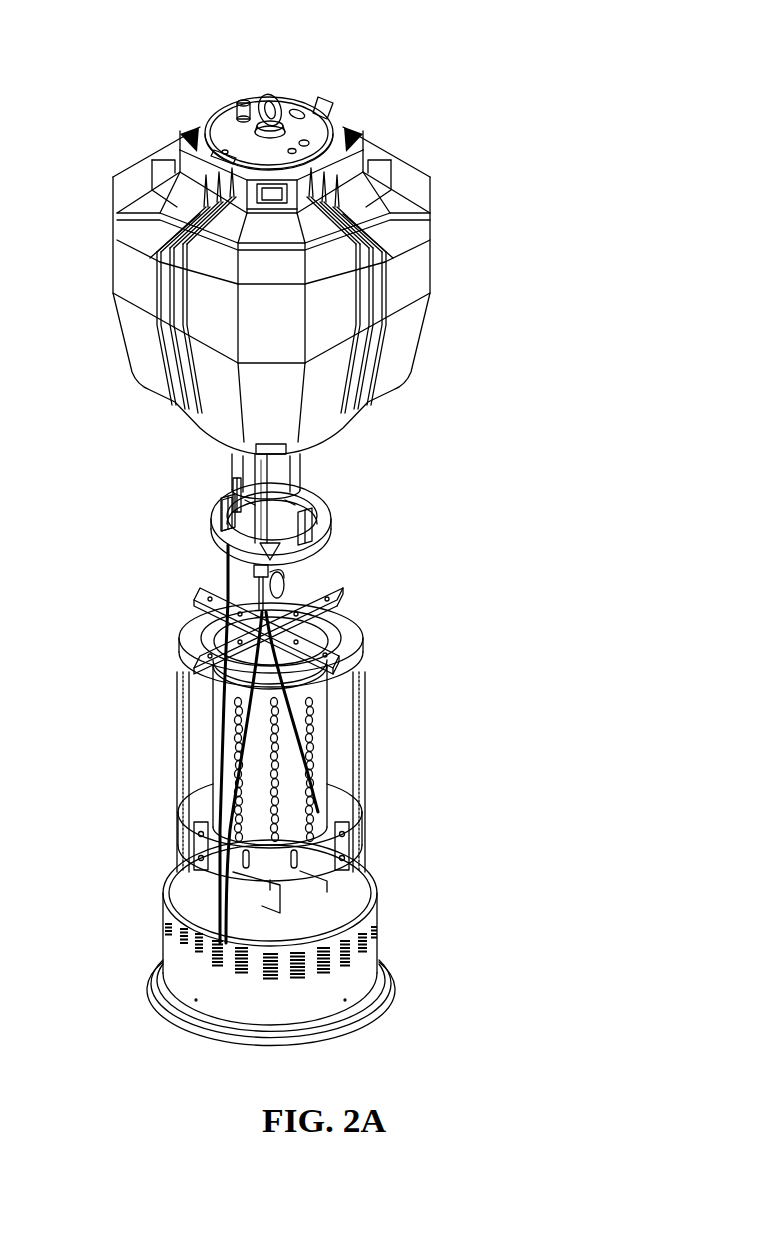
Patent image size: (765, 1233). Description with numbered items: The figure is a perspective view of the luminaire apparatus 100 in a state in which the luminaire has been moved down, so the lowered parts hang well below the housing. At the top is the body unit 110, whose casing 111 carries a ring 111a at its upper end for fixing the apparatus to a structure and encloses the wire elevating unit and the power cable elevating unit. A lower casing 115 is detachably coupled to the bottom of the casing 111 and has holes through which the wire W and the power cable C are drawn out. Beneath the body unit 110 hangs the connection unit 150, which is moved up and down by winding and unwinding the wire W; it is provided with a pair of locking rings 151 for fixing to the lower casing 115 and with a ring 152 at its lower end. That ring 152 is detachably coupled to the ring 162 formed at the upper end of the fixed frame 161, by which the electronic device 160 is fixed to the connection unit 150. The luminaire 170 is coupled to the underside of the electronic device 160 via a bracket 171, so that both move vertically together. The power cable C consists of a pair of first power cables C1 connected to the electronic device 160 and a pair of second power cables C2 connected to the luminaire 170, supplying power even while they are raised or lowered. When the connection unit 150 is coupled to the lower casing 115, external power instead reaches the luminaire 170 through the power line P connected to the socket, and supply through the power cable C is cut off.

The luminaire apparatus 100 is at (67, 65).
The body unit 110 is at (470, 247).
The casing 111 is at (410, 335).
The ring 111a is at (278, 97).
The lower casing 115 is at (340, 427).
The wire W is at (228, 462).
The power cable C is at (224, 507).
The power line P is at (228, 571).
The connection unit 150 is at (350, 510).
The locking rings 151 is at (332, 524).
The ring 152 is at (330, 568).
The electronic device 160 is at (390, 702).
The fixed frame 161 is at (338, 730).
The ring 162 is at (358, 643).
The first power cables C1 is at (222, 637).
The second power cables C2 is at (242, 683).
The luminaire 170 is at (410, 910).
The bracket 171 is at (330, 888).